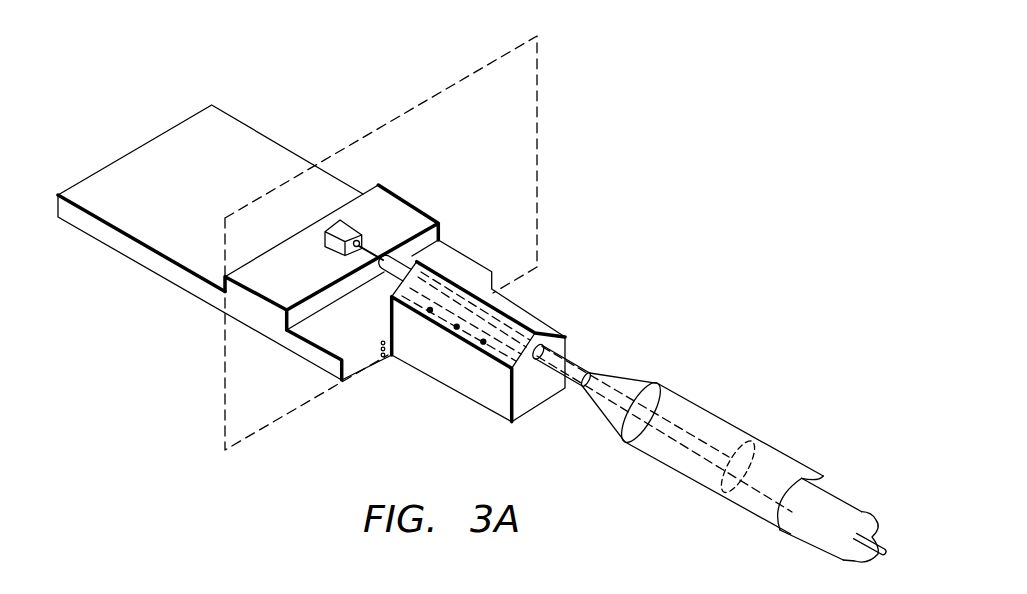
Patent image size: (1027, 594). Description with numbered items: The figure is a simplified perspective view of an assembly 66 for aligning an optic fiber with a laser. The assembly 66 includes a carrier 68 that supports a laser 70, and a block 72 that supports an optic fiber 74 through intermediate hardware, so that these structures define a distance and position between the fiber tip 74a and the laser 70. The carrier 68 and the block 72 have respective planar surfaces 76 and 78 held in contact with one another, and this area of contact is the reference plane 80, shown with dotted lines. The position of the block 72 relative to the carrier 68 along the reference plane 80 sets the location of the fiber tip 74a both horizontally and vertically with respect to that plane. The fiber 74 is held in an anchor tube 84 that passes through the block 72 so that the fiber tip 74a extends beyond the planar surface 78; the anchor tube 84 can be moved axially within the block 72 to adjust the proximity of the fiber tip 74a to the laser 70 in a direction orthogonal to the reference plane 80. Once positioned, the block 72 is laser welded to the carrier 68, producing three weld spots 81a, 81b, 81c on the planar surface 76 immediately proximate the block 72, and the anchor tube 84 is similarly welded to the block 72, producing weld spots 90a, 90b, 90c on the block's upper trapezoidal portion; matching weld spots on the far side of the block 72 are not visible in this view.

The assembly 66 is at (662, 235).
The carrier 68 is at (147, 292).
The laser 70 is at (332, 242).
The block 72 is at (500, 396).
The optic fiber 74 is at (673, 427).
The fiber tip 74a is at (365, 249).
The planar surface 76 is at (492, 285).
The planar surface 78 is at (377, 326).
The reference plane 80 is at (223, 365).
The weld spot 81a is at (382, 345).
The weld spot 81b is at (383, 351).
The weld spot 81c is at (385, 357).
The anchor tube 84 is at (768, 424).
The weld spot 90a is at (430, 310).
The weld spot 90b is at (457, 327).
The weld spot 90c is at (483, 342).